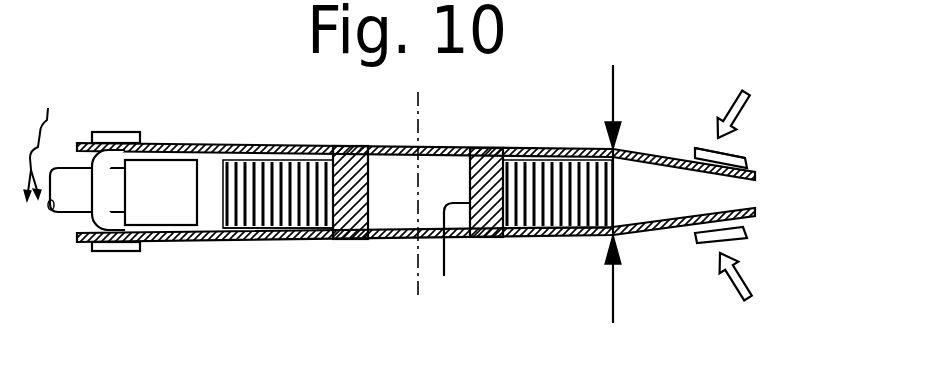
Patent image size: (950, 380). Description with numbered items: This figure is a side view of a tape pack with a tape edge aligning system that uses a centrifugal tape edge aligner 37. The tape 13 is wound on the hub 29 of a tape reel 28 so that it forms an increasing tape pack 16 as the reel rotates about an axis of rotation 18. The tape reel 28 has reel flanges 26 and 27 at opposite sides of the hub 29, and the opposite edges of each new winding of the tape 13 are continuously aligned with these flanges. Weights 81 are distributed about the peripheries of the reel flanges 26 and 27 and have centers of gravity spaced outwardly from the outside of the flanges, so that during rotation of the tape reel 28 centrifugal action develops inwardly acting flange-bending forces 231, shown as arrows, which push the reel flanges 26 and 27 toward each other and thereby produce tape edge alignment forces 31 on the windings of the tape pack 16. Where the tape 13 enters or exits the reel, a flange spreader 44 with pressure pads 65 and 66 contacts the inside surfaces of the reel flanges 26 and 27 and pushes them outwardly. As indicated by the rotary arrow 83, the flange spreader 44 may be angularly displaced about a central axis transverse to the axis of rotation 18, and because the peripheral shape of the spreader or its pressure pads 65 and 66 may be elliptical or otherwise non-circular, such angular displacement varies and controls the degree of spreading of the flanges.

The tape 13 is at (196, 203).
The tape pack 16 is at (504, 135).
The axis of rotation 18 is at (418, 112).
The reel flange 26 is at (241, 143).
The reel flange 27 is at (293, 241).
The tape reel 28 is at (330, 262).
The hub 29 is at (449, 262).
The alignment forces 31 is at (612, 98).
The centrifugal tape edge aligner 37 is at (694, 128).
The flange spreader 44 is at (50, 226).
The pressure pad 65 is at (92, 162).
The pressure pad 66 is at (95, 225).
The weights 81 is at (113, 131).
The rotary arrow 83 is at (43, 139).
The flange-bending forces 231 is at (722, 96).